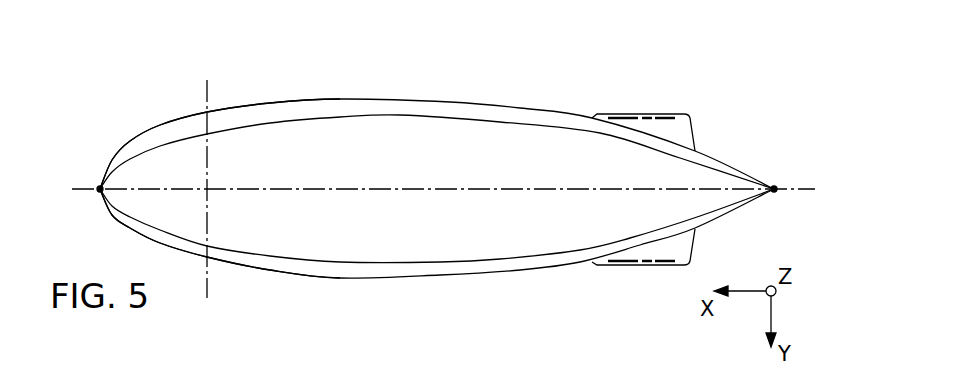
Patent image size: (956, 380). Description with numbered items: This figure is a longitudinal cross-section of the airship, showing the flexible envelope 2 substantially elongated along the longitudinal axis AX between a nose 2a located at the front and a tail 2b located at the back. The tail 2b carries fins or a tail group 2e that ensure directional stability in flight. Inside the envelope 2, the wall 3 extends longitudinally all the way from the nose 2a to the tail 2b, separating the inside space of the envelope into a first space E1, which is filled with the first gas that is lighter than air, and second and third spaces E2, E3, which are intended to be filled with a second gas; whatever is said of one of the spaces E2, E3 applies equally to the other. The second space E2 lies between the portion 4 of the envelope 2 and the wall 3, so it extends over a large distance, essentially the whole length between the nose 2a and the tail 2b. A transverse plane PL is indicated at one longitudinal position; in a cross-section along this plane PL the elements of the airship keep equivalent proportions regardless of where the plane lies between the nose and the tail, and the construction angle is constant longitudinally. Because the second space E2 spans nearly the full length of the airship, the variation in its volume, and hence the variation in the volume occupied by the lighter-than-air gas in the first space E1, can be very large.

The envelope 2 is at (484, 101).
The nose 2a is at (99, 188).
The tail 2b is at (746, 209).
The fins or tail group 2e is at (661, 133).
The wall 3 is at (389, 117).
The portion of the envelope 4 is at (335, 100).
The first space E1 is at (323, 232).
The second space E2 is at (265, 109).
The third space E3 is at (368, 276).
The transverse plane PL is at (204, 92).
The longitudinal axis AX is at (800, 187).